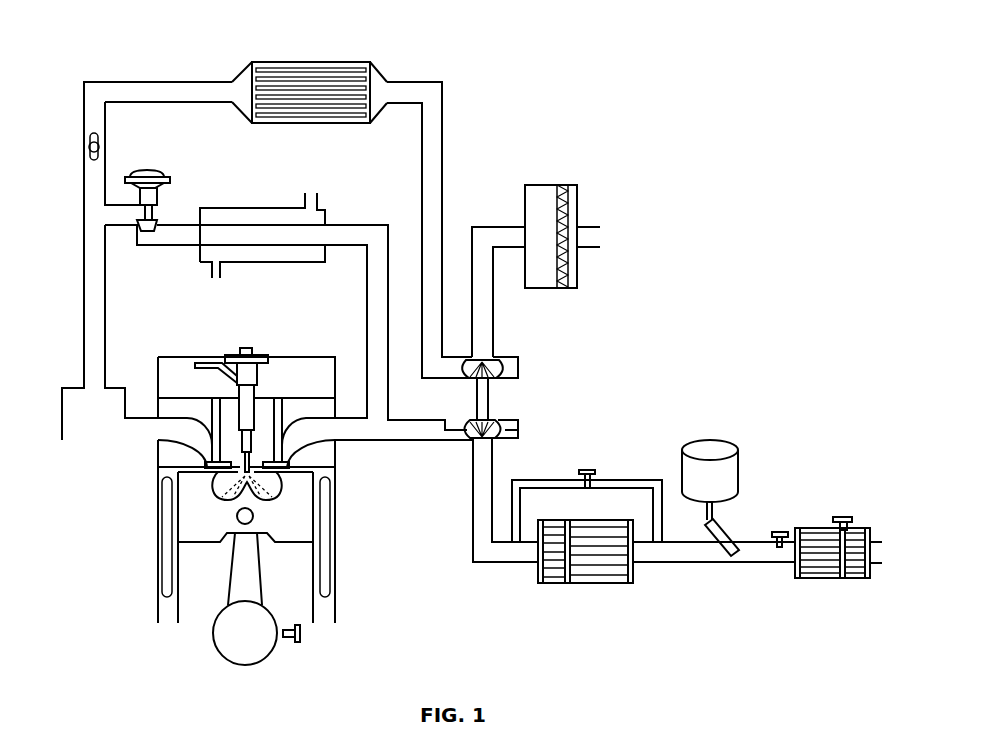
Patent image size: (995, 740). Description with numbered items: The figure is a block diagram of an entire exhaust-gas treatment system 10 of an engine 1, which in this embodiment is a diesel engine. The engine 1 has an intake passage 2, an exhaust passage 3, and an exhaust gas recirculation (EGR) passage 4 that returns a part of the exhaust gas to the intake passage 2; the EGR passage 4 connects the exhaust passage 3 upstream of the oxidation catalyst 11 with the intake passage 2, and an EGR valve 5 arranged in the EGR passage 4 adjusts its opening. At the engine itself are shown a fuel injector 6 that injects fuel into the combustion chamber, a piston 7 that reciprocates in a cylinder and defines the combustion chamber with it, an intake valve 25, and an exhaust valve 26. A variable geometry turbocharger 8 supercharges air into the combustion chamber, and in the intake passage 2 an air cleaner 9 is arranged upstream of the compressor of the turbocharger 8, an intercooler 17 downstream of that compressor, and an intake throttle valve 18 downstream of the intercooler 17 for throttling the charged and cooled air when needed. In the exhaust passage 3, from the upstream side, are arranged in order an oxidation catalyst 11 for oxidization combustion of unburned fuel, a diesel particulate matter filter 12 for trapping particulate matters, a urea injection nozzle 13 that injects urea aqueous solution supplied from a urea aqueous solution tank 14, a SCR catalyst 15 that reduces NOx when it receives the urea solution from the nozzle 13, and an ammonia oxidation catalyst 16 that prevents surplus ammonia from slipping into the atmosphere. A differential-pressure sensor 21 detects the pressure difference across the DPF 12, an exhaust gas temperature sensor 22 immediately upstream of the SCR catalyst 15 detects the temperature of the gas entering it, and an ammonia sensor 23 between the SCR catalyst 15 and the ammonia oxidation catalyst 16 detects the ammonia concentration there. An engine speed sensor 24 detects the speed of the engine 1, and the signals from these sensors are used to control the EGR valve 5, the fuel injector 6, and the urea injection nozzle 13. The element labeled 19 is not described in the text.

The engine 1 is at (719, 235).
The intake passage 2 is at (107, 311).
The exhaust passage 3 is at (408, 442).
The exhaust gas recirculation (EGR) passage 4 is at (365, 318).
The EGR valve 5 is at (148, 168).
The fuel injector 6 is at (247, 347).
The piston 7 is at (215, 535).
The variable geometry (VGT) turbocharger 8 is at (507, 400).
The air cleaner 9 is at (554, 185).
The exhaust-gas treatment system 10 is at (801, 440).
The oxidation catalyst 11 is at (556, 586).
The diesel particulate matter filter (DPF) 12 is at (601, 586).
The urea injection nozzle 13 is at (736, 554).
The urea aqueous solution tank 14 is at (711, 440).
The SCR catalyst 15 is at (817, 580).
The ammonia oxidation catalyst 16 is at (853, 582).
The intercooler 17 is at (310, 60).
The intake throttle valve 18 is at (91, 143).
The intake manifold 19 is at (267, 208).
The differential-pressure sensor 21 is at (589, 466).
The exhaust gas temperature sensor 22 is at (781, 529).
The ammonia sensor 23 is at (843, 515).
The engine speed sensor 24 is at (302, 634).
The intake valve 25 is at (212, 442).
The exhaust valve 26 is at (279, 444).